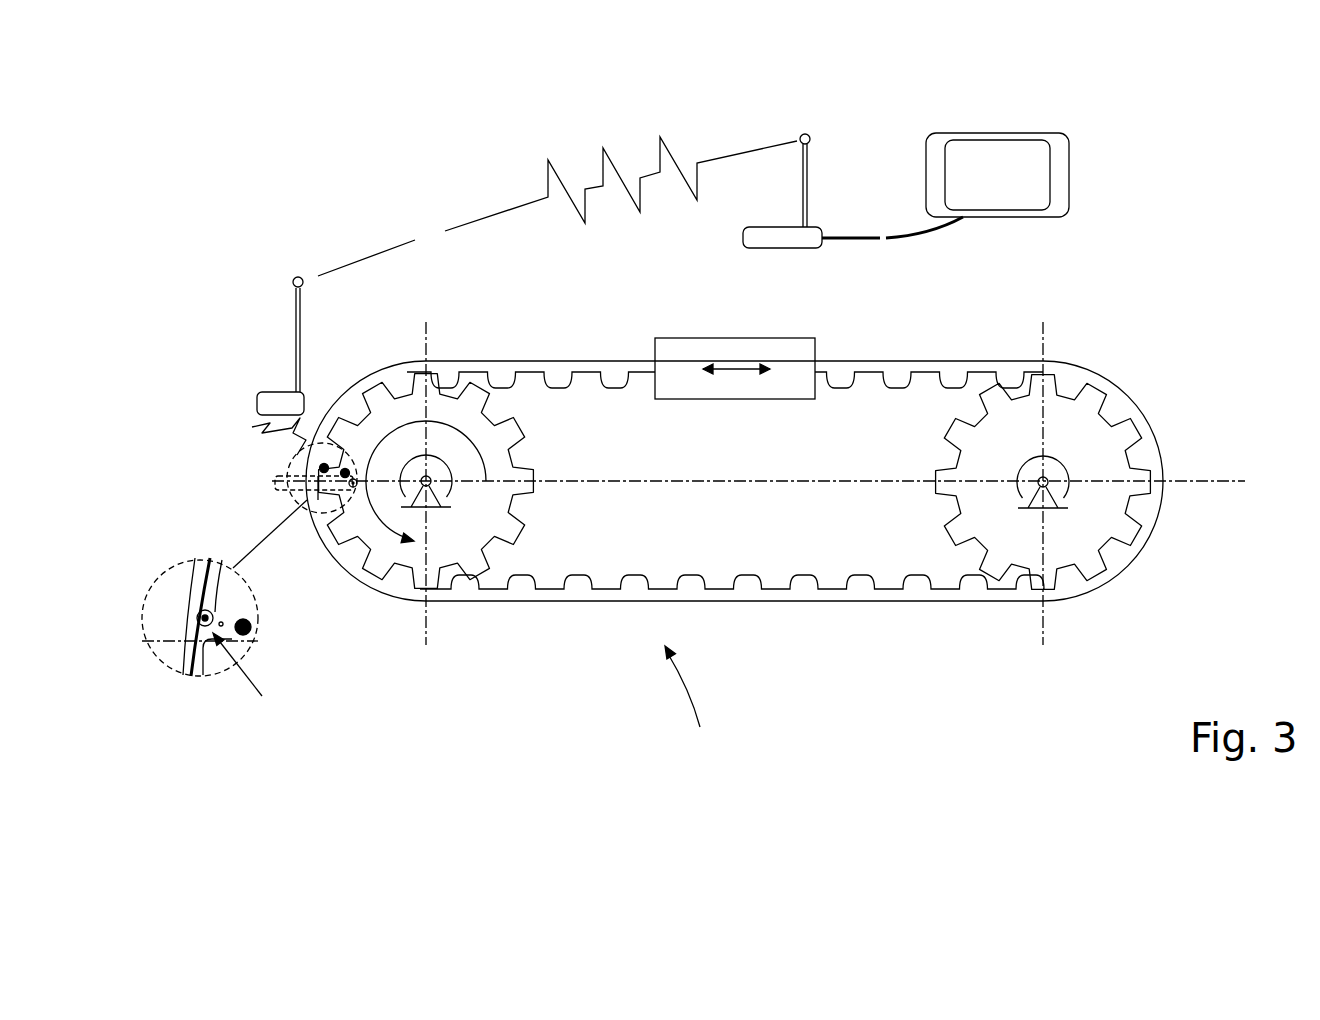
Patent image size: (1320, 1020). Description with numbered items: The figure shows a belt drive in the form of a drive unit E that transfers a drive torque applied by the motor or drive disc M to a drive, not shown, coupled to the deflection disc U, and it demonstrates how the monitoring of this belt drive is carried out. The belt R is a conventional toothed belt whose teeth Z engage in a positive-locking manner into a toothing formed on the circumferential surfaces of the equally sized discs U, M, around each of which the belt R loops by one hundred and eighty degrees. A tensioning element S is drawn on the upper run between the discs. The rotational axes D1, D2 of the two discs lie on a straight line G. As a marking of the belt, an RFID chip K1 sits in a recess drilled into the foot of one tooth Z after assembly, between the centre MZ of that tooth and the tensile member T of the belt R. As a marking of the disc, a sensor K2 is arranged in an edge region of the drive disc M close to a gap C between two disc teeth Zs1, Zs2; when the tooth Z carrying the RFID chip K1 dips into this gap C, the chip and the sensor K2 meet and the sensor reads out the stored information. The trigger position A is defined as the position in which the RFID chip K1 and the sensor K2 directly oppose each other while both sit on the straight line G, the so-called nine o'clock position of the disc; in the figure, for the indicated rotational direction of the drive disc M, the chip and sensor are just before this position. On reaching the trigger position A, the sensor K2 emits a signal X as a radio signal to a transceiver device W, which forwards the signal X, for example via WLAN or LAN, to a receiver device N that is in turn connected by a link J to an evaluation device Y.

The belt R is at (905, 362).
The tensioning device S is at (705, 355).
The drive disc M is at (480, 449).
The rotational axis D1 is at (430, 483).
The rotational axis D2 is at (1040, 481).
The deflection disc U is at (1122, 427).
The straight line G is at (712, 475).
The drive unit E is at (692, 703).
The transceiver device W is at (285, 407).
The signal X is at (514, 296).
The receiver device N is at (785, 237).
The cable connection J is at (892, 233).
The evaluation device Y is at (1004, 182).
The tooth of the disc Zs1 is at (333, 440).
The tooth of the disc Zs2 is at (311, 502).
The trigger position A is at (277, 488).
The RFID chip K1 is at (320, 467).
The sensor K2 is at (252, 632).
The centre of the tooth MZ is at (221, 620).
The tensile member T is at (188, 660).
The gap C is at (195, 680).
The teeth of the belt Z is at (246, 676).